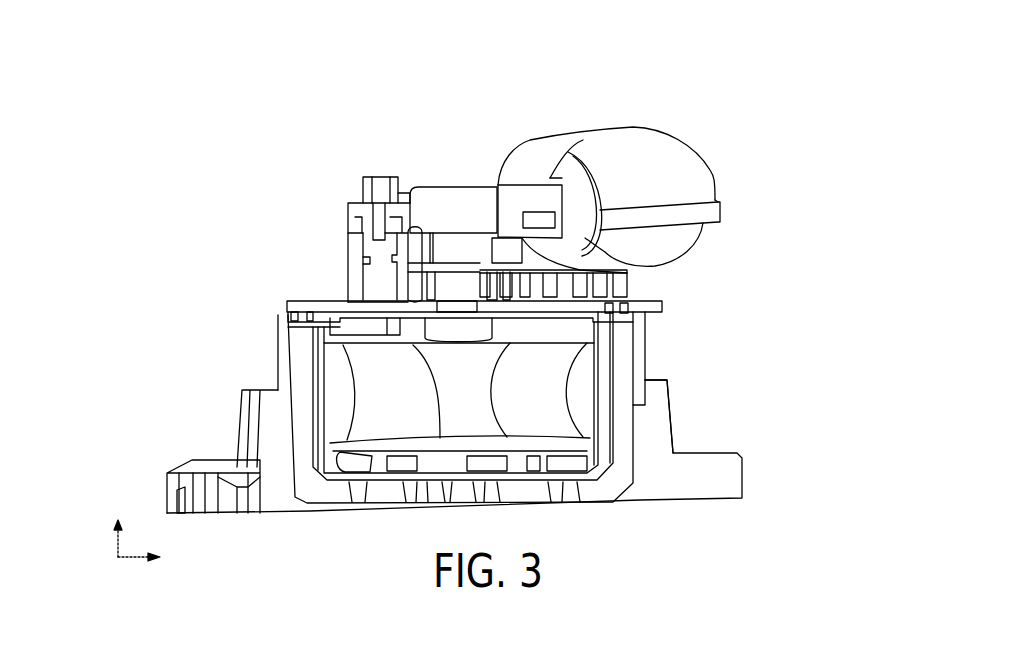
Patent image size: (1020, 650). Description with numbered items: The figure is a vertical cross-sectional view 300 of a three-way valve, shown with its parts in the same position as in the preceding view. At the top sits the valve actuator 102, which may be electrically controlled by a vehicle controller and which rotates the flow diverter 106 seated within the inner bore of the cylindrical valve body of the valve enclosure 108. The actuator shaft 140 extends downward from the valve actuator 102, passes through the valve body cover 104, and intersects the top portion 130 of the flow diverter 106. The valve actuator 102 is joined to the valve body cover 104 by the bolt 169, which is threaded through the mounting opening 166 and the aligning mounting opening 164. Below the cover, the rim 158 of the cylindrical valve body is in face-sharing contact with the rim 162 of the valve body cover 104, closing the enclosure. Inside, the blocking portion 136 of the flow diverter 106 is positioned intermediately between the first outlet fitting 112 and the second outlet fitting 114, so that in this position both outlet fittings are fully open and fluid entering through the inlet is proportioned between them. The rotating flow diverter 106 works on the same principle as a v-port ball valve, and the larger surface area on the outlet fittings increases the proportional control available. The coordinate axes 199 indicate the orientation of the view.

The vertical cross-sectional view 300 is at (615, 83).
The valve actuator 102 is at (690, 147).
The valve body cover 104 is at (600, 268).
The flow diverter 106 is at (567, 333).
The valve enclosure 108 is at (645, 342).
The first outlet fitting 112 is at (589, 405).
The second outlet fitting 114 is at (364, 408).
The top portion 130 is at (343, 312).
The blocking portion 136 is at (456, 394).
The actuator shaft 140 is at (470, 305).
The rim 158 is at (292, 328).
The rim 162 is at (288, 312).
The mounting opening 164 is at (362, 283).
The mounting opening 166 is at (350, 205).
The bolt 169 is at (378, 188).
The coordinate axes 199 is at (108, 522).